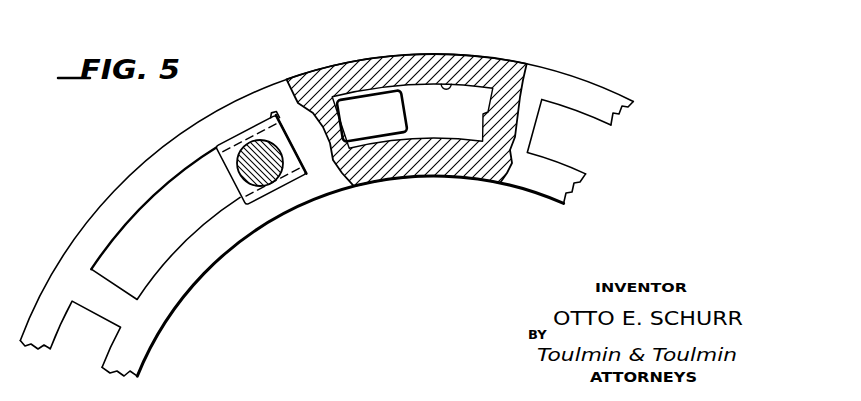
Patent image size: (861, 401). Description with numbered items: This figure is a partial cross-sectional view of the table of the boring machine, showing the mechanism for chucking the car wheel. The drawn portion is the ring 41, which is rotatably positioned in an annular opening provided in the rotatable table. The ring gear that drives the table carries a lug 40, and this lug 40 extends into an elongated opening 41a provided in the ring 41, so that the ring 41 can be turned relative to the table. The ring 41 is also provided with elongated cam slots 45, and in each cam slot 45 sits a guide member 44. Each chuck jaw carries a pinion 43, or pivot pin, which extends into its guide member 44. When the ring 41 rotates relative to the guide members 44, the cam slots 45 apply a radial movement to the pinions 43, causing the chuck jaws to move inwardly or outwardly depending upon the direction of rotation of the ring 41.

The lug 40 is at (370, 103).
The ring 41 is at (217, 123).
The elongated opening 41a is at (452, 86).
The pinion 43 is at (262, 158).
The guide member 44 is at (271, 134).
The elongated cam slot 45 is at (155, 215).